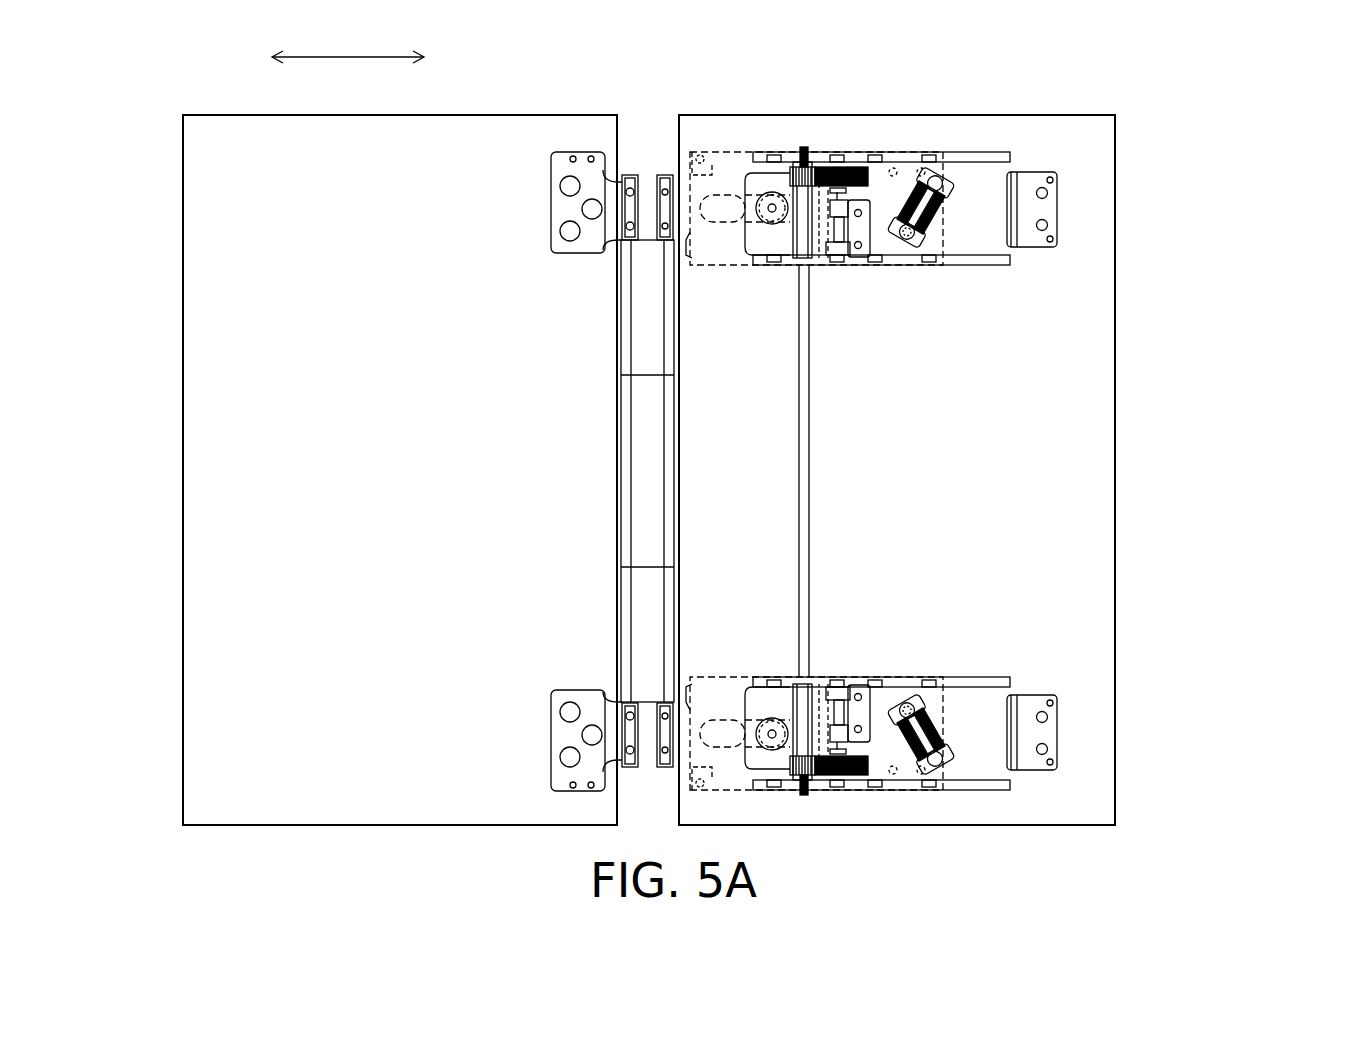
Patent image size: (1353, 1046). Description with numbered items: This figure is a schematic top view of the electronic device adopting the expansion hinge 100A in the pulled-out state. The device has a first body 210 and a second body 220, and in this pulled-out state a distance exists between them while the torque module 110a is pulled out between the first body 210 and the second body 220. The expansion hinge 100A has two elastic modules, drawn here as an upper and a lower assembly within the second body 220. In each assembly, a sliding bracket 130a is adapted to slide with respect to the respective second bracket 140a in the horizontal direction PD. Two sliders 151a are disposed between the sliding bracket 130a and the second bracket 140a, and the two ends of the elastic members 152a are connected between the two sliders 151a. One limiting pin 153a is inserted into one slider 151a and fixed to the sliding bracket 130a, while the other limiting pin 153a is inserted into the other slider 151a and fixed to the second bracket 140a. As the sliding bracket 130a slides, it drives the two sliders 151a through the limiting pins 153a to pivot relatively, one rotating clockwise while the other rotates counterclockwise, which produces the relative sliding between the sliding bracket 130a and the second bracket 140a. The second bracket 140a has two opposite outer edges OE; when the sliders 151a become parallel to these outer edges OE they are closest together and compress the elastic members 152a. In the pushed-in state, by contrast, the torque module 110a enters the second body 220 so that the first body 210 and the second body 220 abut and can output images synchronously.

The expansion hinge 100A is at (1322, 850).
The torque module 110a is at (646, 262).
The sliding bracket 130a is at (718, 265).
The second bracket 140a is at (992, 190).
The slider 151a is at (996, 170).
The elastic member 152a is at (903, 190).
The limiting pin 153a is at (936, 175).
The first body 210 is at (183, 726).
The second body 220 is at (1115, 726).
The outer edge OE is at (855, 146).
The horizontal direction PD is at (348, 42).